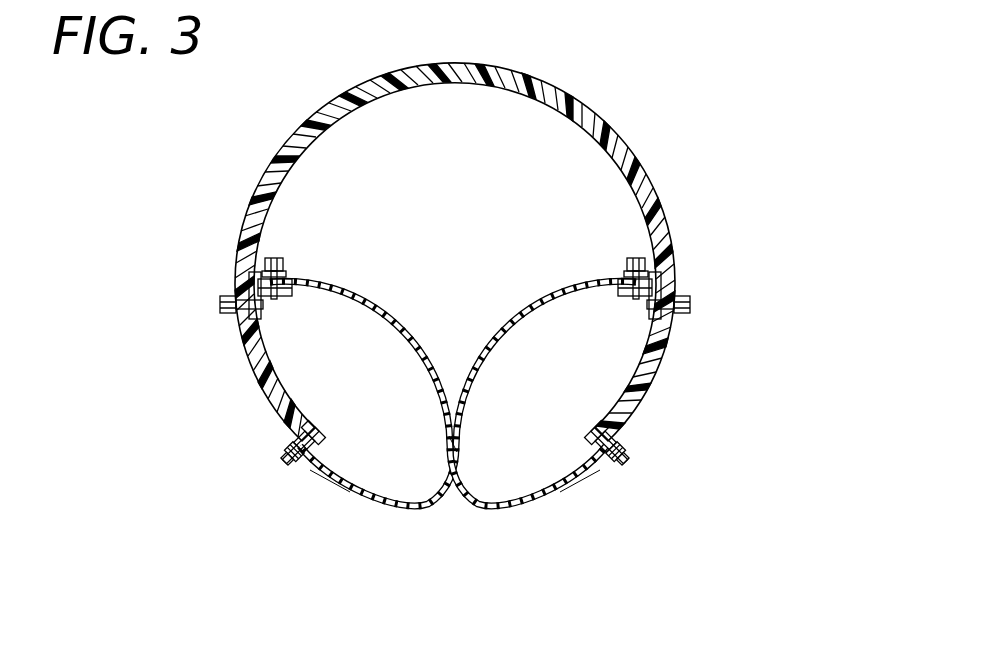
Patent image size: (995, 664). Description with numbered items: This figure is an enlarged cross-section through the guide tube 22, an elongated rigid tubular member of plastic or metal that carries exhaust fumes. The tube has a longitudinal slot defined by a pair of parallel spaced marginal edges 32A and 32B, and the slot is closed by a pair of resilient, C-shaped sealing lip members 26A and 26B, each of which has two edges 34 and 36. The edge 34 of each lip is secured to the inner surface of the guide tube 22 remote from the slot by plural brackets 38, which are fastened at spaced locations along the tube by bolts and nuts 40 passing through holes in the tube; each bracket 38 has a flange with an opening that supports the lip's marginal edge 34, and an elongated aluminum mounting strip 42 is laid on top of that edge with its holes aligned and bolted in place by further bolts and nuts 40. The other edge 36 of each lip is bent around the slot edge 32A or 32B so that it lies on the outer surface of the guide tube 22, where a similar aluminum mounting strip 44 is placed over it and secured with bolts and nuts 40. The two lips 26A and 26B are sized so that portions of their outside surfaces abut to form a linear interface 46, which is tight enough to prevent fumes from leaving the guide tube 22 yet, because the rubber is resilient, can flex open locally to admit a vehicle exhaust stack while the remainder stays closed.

The guide tube 22 is at (634, 153).
The sealing lip member 26A is at (515, 510).
The sealing lip member 26B is at (398, 510).
The marginal edge of slot 32A is at (594, 478).
The marginal edge of slot 32B is at (337, 475).
The edge of sealing lip member 34 is at (250, 275).
The edge of sealing lip member 36 is at (278, 440).
The bracket 38 is at (288, 295).
The bolts and nuts 40 is at (228, 314).
The mounting strip 42 is at (282, 270).
The mounting strip 44 is at (300, 470).
The interface 46 is at (470, 440).